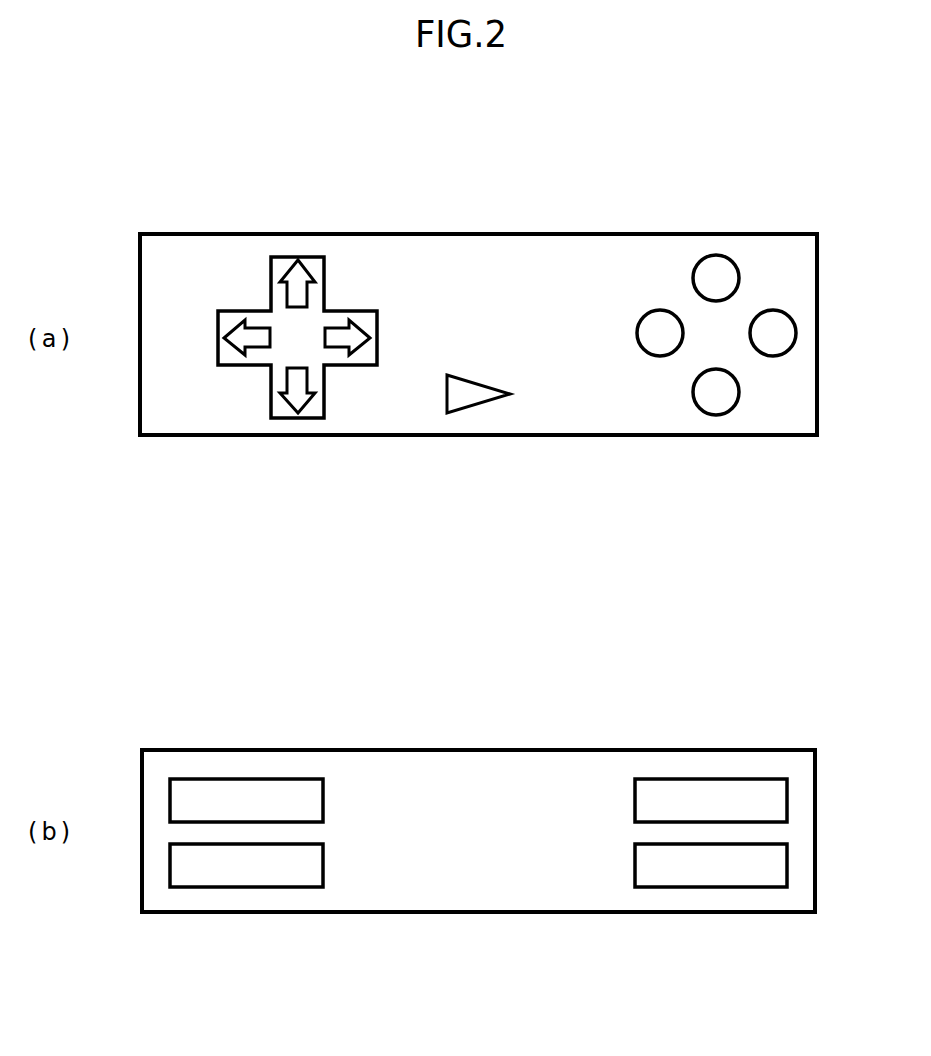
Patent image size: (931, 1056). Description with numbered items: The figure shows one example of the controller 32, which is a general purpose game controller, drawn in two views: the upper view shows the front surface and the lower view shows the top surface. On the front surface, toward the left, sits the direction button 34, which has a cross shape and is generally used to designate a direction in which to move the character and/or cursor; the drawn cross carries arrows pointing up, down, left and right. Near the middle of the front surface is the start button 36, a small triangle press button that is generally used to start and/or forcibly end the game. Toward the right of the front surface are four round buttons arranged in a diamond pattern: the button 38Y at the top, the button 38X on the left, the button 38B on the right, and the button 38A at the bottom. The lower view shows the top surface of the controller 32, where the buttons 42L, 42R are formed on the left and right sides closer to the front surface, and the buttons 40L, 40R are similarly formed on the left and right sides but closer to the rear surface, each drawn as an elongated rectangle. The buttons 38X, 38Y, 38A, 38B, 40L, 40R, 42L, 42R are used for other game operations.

The controller 32 is at (200, 234).
The direction button 34 is at (324, 279).
The start button 36 is at (478, 402).
The button 38Y is at (693, 278).
The button 38X is at (637, 333).
The button 38A is at (693, 392).
The button 38B is at (796, 333).
The button 40L is at (247, 779).
The button 40R is at (712, 779).
The button 42L is at (247, 887).
The button 42R is at (713, 887).